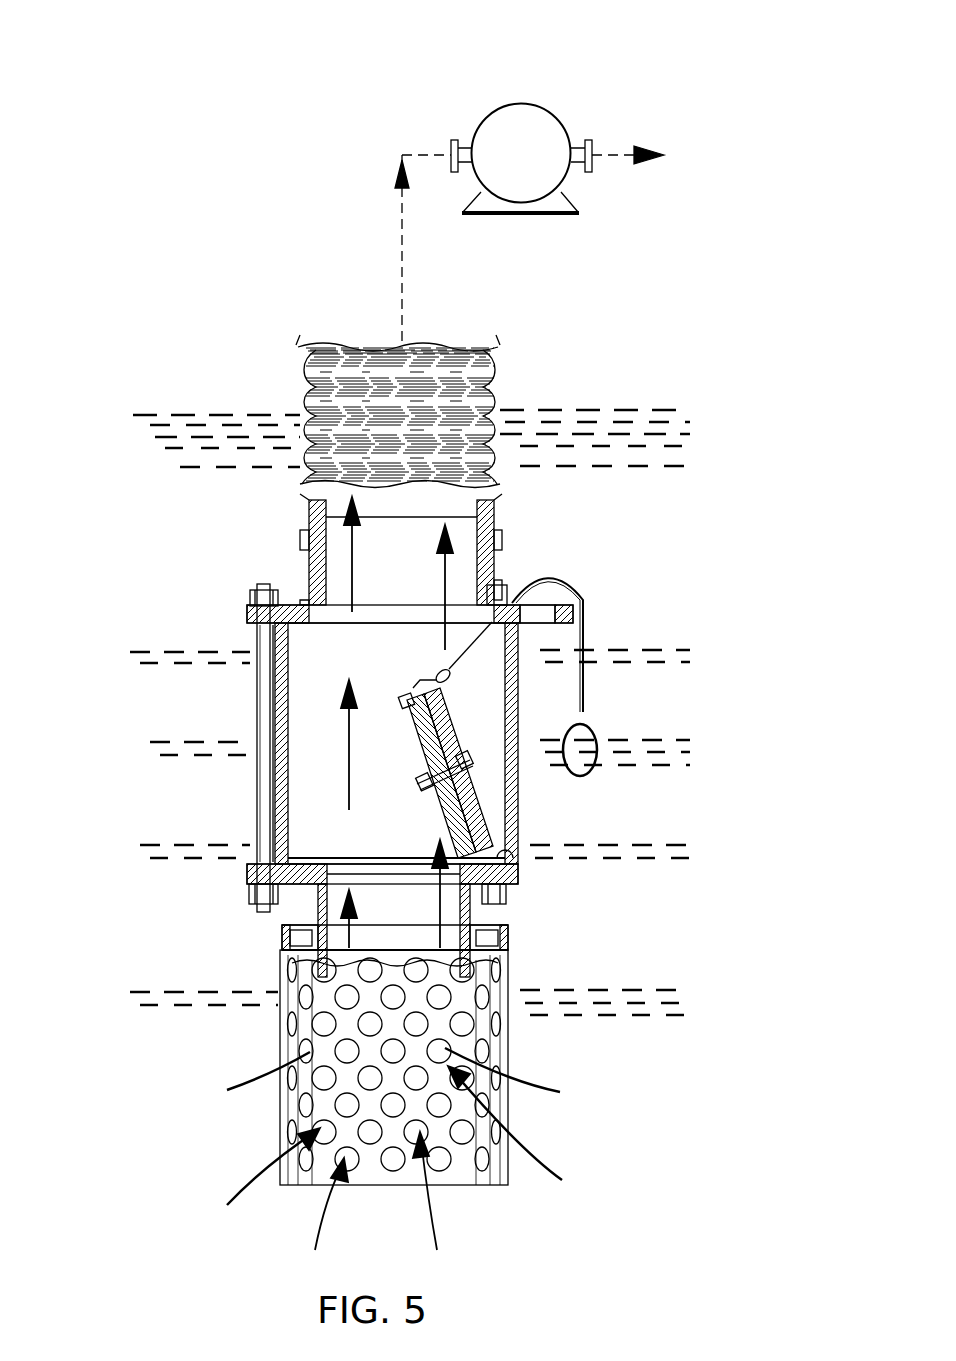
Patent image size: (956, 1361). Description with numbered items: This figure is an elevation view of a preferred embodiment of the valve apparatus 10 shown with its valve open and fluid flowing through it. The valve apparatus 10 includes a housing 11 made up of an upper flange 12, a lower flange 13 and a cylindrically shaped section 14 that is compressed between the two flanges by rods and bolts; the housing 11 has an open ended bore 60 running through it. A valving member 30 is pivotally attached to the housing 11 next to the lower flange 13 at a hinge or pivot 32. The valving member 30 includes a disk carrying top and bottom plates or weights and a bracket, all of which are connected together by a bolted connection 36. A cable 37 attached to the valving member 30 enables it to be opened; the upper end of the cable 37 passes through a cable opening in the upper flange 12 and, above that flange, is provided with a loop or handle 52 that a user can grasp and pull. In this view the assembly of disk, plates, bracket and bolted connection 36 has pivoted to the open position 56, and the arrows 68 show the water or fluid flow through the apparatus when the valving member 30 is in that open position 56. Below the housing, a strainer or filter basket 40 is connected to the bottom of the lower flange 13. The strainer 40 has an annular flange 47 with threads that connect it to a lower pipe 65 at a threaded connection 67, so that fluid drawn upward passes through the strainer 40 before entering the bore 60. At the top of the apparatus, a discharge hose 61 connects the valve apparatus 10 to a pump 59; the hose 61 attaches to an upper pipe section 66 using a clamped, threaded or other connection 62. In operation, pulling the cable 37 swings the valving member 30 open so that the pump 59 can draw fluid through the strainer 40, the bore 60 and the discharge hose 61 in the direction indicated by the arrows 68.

The valve apparatus 10 is at (93, 50).
The housing 11 is at (220, 785).
The upper flange 12 is at (298, 600).
The lower flange 13 is at (243, 875).
The cylindrically shaped section 14 is at (522, 830).
The valving member 30 is at (407, 706).
The hinge or pivot 32 is at (518, 843).
The bolted connection 36 is at (422, 787).
The cable 37 is at (570, 572).
The strainer or filter basket 40 is at (280, 1042).
The annular flange 47 is at (510, 937).
The loop or handle 52 is at (592, 740).
The open position 56 is at (708, 668).
The pump 59 is at (532, 104).
The open ended bore 60 is at (322, 674).
The discharge hose 61 is at (500, 372).
The connection 62 is at (306, 530).
The lower pipe 65 is at (320, 897).
The upper pipe section 66 is at (482, 540).
The threaded connection 67 is at (318, 925).
The arrows 68 is at (397, 596).